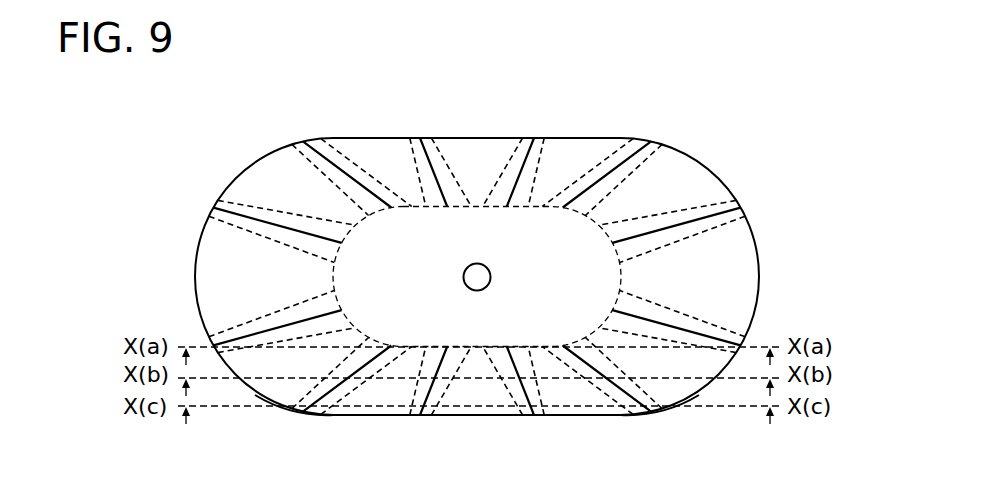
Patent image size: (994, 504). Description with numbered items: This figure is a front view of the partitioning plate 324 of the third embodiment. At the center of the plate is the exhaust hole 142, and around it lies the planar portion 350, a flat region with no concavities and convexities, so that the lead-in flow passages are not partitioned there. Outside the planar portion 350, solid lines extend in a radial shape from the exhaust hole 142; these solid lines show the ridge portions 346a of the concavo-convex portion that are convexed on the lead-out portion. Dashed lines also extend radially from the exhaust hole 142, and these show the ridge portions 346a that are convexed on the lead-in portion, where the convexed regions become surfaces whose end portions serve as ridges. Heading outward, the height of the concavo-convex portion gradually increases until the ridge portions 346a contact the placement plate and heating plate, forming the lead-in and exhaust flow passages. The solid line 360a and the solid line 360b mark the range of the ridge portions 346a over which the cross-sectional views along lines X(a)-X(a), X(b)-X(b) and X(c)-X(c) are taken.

The exhaust hole 142 is at (477, 263).
The partitioning plate 324 is at (627, 138).
The ridge portions 346a is at (368, 183).
The planar portion 350 is at (527, 236).
The solid line 360a is at (308, 413).
The solid line 360b is at (647, 413).